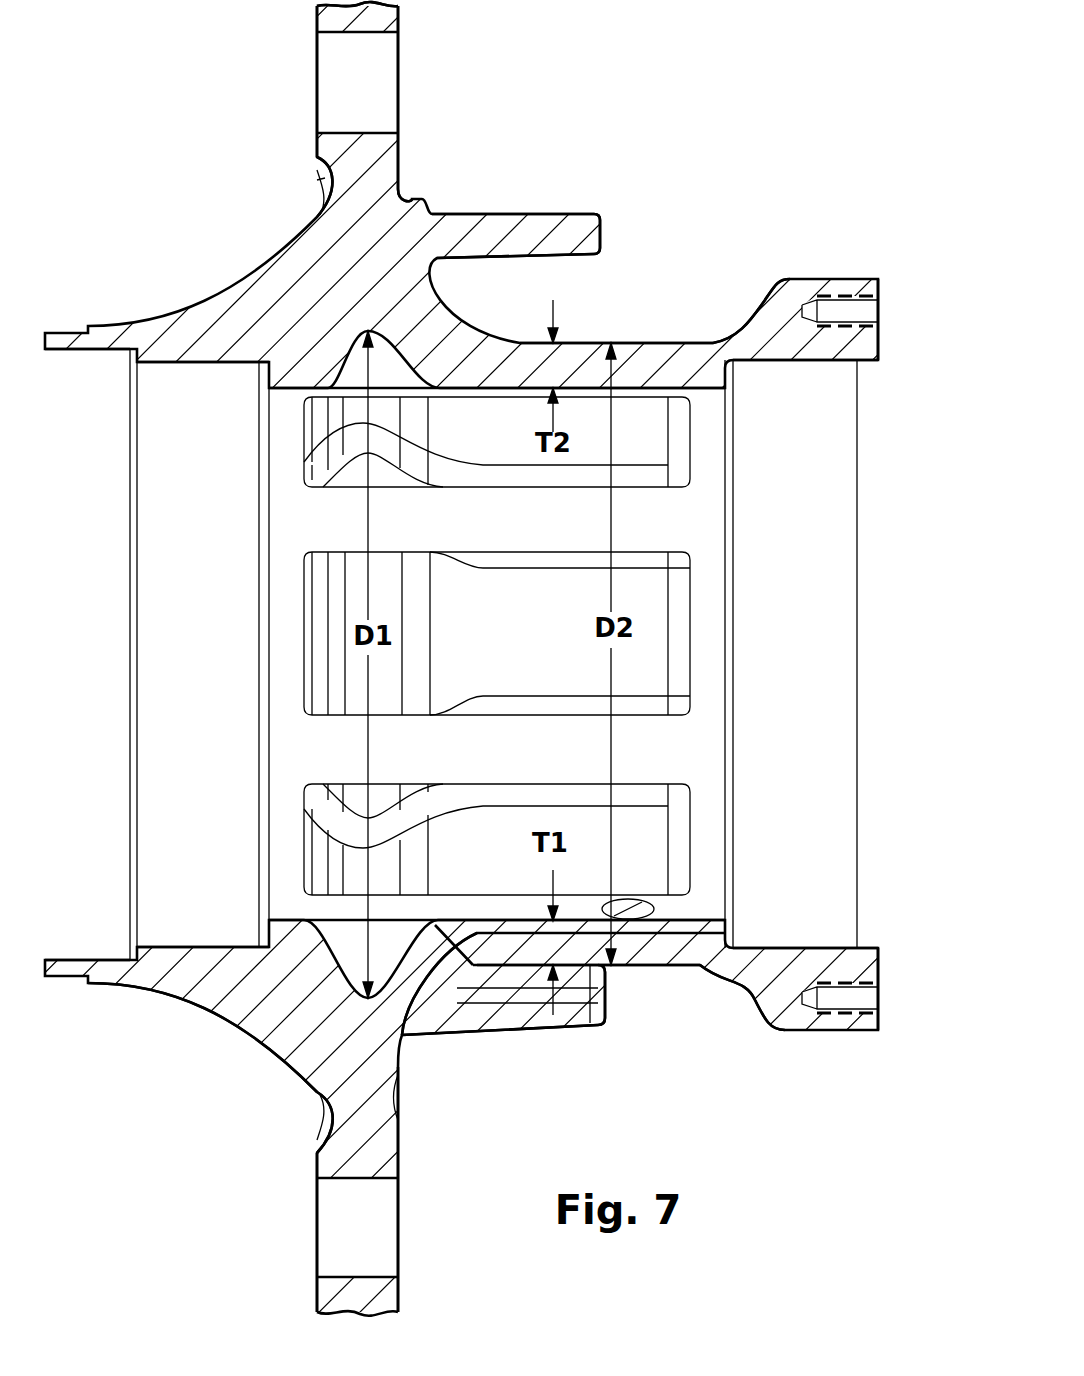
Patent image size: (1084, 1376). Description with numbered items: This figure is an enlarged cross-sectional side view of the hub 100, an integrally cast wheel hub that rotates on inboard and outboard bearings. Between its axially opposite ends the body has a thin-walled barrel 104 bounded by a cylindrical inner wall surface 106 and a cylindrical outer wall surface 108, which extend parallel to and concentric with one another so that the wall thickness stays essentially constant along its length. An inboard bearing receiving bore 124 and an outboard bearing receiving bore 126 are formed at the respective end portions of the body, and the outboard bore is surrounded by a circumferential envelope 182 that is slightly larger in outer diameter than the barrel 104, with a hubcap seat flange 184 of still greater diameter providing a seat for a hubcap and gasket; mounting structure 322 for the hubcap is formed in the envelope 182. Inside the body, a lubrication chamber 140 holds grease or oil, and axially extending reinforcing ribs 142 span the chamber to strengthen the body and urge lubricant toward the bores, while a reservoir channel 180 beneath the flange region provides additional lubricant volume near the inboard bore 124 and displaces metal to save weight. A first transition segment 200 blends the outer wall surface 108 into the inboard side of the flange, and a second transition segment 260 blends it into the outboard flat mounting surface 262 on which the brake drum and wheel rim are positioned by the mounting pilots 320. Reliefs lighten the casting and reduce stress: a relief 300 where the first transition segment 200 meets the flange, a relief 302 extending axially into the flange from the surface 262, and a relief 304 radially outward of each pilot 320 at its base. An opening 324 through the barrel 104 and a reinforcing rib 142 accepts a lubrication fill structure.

The hub 100 is at (690, 124).
The barrel portion 104 is at (692, 362).
The cylindrical inner wall surface 106 is at (628, 398).
The cylindrical outer wall surface 108 is at (578, 343).
The inboard bearing receiving bore 124 is at (228, 375).
The outboard bearing receiving bore 126 is at (818, 946).
The lubrication chamber 140 is at (670, 863).
The reinforcing ribs 142 is at (670, 541).
The reservoir channel 180 is at (330, 968).
The circumferential envelope 182 is at (786, 322).
The hubcap seat flange 184 is at (880, 480).
The first transition segment 200 is at (282, 238).
The second transition segment 260 is at (452, 1030).
The outboard flat mounting surface 262 is at (400, 10).
The relief 300 is at (318, 1128).
The relief 302 is at (400, 1100).
The relief 304 is at (404, 196).
The mounting pilots 320 is at (570, 234).
The mounting structure 322 is at (838, 296).
The opening 324 is at (690, 920).